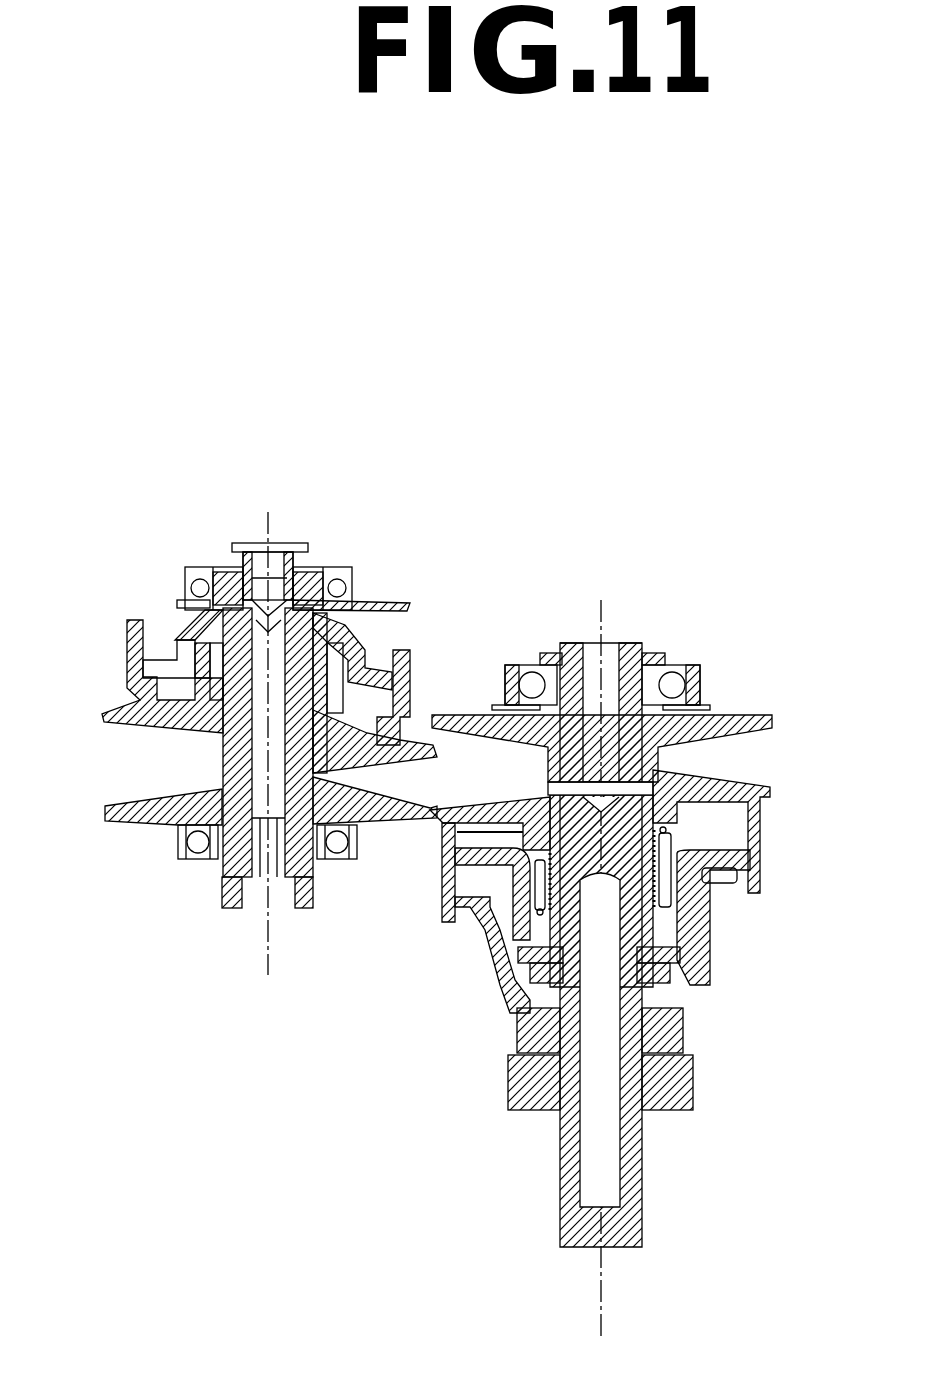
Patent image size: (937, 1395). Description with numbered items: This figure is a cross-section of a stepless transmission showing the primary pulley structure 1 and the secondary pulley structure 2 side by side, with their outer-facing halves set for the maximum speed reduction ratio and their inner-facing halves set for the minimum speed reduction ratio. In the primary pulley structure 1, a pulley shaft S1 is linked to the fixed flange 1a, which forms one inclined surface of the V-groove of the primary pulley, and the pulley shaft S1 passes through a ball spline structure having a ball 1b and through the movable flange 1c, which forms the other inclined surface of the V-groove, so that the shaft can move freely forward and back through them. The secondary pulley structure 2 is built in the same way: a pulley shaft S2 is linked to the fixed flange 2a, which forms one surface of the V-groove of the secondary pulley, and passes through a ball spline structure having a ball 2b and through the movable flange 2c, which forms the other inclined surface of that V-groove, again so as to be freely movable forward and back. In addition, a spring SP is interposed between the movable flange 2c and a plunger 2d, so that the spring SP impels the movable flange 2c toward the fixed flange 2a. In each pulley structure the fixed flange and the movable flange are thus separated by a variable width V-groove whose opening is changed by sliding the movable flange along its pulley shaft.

The pulley shaft S1 is at (177, 638).
The pulley shaft S2 is at (572, 642).
The primary pulley structure 1 is at (333, 897).
The fixed flange 1a is at (140, 828).
The ball 1b is at (212, 693).
The movable flange 1c is at (104, 718).
The secondary pulley structure 2 is at (686, 1128).
The fixed flange 2a is at (740, 712).
The ball 2b is at (693, 1040).
The movable flange 2c is at (768, 795).
The plunger 2d is at (720, 878).
The spring SP is at (700, 930).